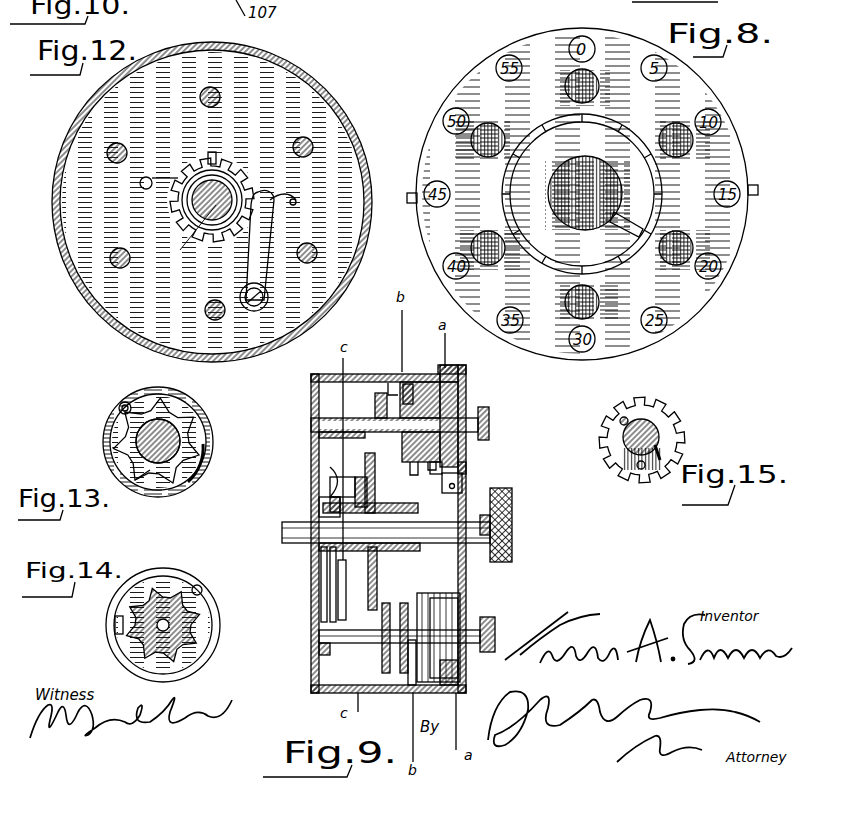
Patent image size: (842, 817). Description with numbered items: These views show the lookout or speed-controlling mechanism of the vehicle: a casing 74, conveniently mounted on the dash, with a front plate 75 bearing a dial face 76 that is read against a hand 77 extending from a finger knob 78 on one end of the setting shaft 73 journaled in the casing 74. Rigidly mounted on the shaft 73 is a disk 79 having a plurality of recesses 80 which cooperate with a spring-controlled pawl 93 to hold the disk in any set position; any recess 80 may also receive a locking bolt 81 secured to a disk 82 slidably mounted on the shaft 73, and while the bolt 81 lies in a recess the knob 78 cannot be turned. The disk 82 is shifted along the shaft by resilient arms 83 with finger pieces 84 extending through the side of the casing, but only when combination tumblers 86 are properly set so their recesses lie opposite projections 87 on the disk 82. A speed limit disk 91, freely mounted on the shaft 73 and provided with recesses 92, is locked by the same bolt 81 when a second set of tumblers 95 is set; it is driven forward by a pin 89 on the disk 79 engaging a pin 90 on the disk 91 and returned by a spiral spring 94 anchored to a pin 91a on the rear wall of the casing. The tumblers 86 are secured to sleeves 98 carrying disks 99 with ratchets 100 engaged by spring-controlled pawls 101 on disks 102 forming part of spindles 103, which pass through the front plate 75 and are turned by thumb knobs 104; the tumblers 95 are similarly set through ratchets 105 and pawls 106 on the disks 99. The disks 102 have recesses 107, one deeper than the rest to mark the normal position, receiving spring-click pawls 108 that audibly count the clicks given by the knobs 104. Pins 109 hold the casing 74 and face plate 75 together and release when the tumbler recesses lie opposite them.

In FIG. 12, the shaft 73 is at (192, 240).
In FIG. 9, the shaft 73 is at (290, 535).
In FIG. 15, the shaft 73 is at (626, 446).
In FIG. 12, the casing 74 is at (366, 185).
In FIG. 9, the casing 74 is at (311, 390).
In FIG. 8, the front plate 75 is at (582, 194).
In FIG. 9, the front plate 75 is at (466, 470).
In FIG. 8, the dial face 76 is at (703, 327).
In FIG. 8, the hand 77 is at (622, 228).
In FIG. 8, the finger knob 78 is at (587, 193).
In FIG. 9, the finger knob 78 is at (512, 523).
In FIG. 9, the disk 79 is at (321, 560).
In FIG. 15, the disk 79 is at (652, 406).
In FIG. 9, the recesses 80 is at (319, 505).
In FIG. 15, the recesses 80 is at (676, 418).
In FIG. 12, the locking bolt 81 is at (213, 152).
In FIG. 9, the locking bolt 81 is at (330, 470).
In FIG. 9, the disk 82 is at (377, 575).
In FIG. 9, the resilient arms 83 is at (398, 508).
In FIG. 8, the finger pieces 84 is at (405, 198).
In FIG. 9, the tumblers 86 is at (375, 400).
In FIG. 9, the projections 87 is at (365, 460).
In FIG. 9, the pin 89 is at (330, 575).
In FIG. 15, the pin 89 is at (632, 470).
In FIG. 15, the pin 90 is at (622, 416).
In FIG. 12, the disk 91 is at (183, 213).
In FIG. 9, the disk 91 is at (338, 605).
In FIG. 12, the pin 91a is at (150, 176).
In FIG. 12, the recesses 92 is at (232, 172).
In FIG. 9, the recesses 92 is at (330, 620).
In FIG. 12, the spring-controlled pawl 93 is at (262, 196).
In FIG. 9, the spring-controlled pawl 93 is at (319, 648).
In FIG. 12, the spiral spring 94 is at (196, 238).
In FIG. 9, the spiral spring 94 is at (364, 498).
In FIG. 9, the tumblers 95 is at (398, 698).
In FIG. 9, the sleeves 98 is at (400, 388).
In FIG. 13, the sleeves 98 is at (180, 488).
In FIG. 9, the disks 99 is at (426, 380).
In FIG. 13, the disks 99 is at (106, 447).
In FIG. 9, the ratchets 100 is at (466, 400).
In FIG. 14, the ratchets 100 is at (190, 650).
In FIG. 14, the spring-controlled pawls 101 is at (183, 584).
In FIG. 9, the disks 102 is at (436, 380).
In FIG. 14, the disks 102 is at (205, 610).
In FIG. 12, the spindles 103 is at (303, 140).
In FIG. 9, the spindles 103 is at (311, 426).
In FIG. 13, the spindles 103 is at (140, 439).
In FIG. 14, the spindles 103 is at (115, 620).
In FIG. 8, the thumb knobs 104 is at (492, 138).
In FIG. 9, the thumb knobs 104 is at (489, 418).
In FIG. 9, the ratchets 105 is at (433, 483).
In FIG. 13, the ratchets 105 is at (150, 478).
In FIG. 13, the spring-controlled pawls 106 is at (135, 402).
In FIG. 9, the recesses 107 is at (466, 378).
In FIG. 9, the spring-click pawls 108 is at (458, 462).
In FIG. 9, the pins 109 is at (388, 383).